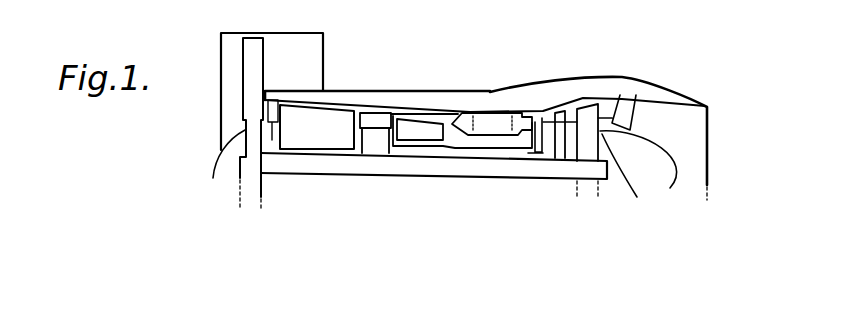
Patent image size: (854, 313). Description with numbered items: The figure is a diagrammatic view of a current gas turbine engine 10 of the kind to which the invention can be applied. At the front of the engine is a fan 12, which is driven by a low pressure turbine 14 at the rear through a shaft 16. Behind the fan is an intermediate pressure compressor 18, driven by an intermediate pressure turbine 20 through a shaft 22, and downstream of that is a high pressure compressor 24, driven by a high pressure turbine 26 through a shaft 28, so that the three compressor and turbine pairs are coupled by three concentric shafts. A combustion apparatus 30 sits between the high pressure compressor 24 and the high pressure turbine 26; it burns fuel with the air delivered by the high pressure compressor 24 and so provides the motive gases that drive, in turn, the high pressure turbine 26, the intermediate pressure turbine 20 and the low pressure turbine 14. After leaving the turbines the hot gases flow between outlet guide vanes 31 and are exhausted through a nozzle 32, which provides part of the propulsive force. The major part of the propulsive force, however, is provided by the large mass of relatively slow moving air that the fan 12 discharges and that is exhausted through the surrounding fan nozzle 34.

The gas turbine engine 10 is at (426, 50).
The fan 12 is at (250, 55).
The low pressure turbine 14 is at (638, 178).
The shaft 16 is at (408, 165).
The intermediate pressure compressor 18 is at (302, 142).
The intermediate pressure turbine 20 is at (558, 153).
The shaft 22 is at (357, 150).
The high pressure compressor 24 is at (430, 137).
The high pressure turbine 26 is at (532, 148).
The shaft 28 is at (500, 148).
The combustion apparatus 30 is at (487, 118).
The outlet guide vanes 31 is at (597, 93).
The nozzle 32 is at (680, 103).
The fan nozzle 34 is at (317, 50).